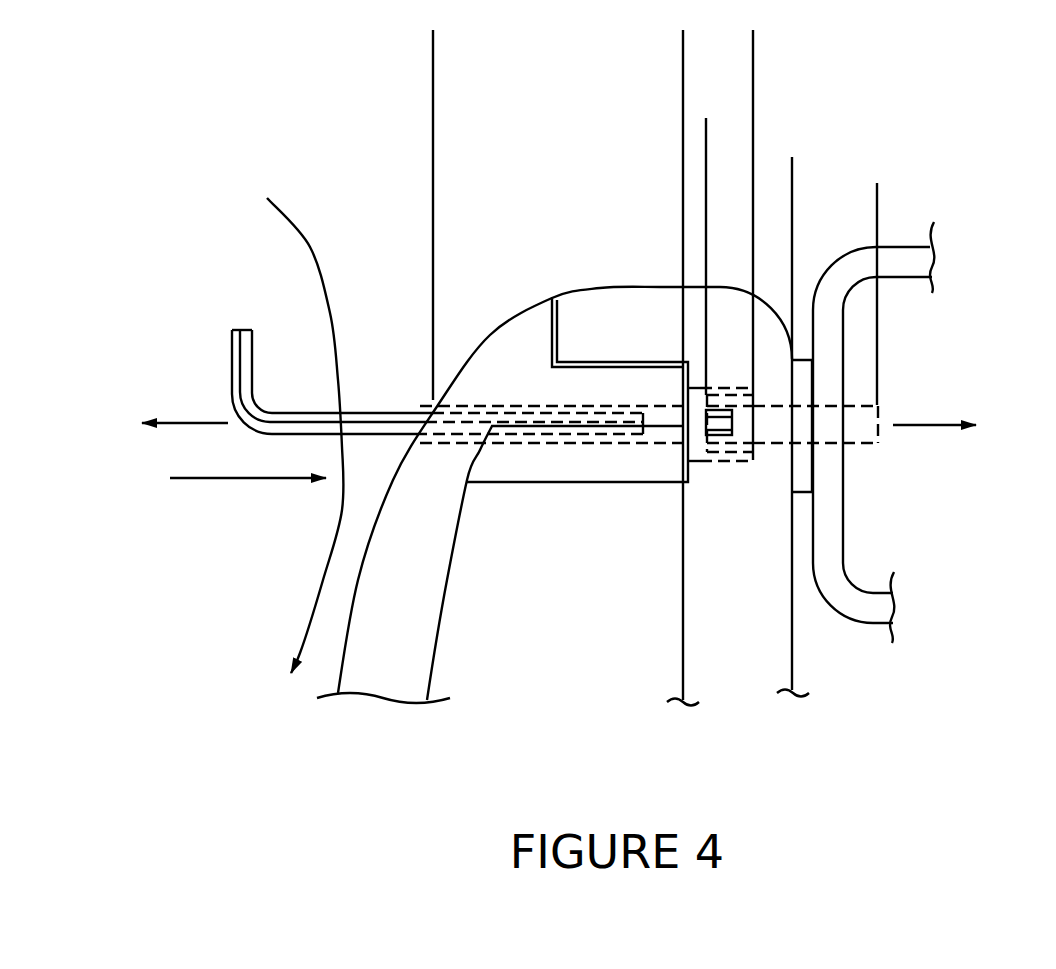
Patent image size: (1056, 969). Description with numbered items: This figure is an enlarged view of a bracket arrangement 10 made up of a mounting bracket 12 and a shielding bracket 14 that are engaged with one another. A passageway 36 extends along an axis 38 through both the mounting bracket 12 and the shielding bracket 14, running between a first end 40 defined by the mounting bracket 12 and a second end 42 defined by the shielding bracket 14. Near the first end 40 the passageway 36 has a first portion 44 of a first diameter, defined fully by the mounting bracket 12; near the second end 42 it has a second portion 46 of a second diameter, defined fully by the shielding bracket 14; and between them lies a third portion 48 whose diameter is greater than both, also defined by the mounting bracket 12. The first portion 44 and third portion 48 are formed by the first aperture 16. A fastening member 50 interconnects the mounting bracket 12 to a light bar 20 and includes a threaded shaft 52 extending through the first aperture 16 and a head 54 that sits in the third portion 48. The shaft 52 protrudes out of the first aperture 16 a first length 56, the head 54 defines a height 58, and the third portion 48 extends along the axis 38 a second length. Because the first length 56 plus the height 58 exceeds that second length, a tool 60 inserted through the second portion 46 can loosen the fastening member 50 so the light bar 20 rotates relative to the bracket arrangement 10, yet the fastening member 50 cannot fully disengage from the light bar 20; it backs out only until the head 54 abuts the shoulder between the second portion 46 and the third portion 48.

The bracket arrangement 10 is at (942, 101).
The mounting bracket 12 is at (756, 637).
The shielding bracket 14 is at (423, 637).
The first aperture 16 is at (702, 392).
The light bar 20 is at (852, 480).
The passageway 36 is at (420, 406).
The axis 38 is at (198, 422).
The first end 40 is at (793, 385).
The second end 42 is at (418, 444).
The first portion 44 is at (840, 181).
The second portion 46 is at (435, 55).
The third portion 48 is at (800, 86).
The fastening member 50 is at (919, 442).
The shaft 52 is at (875, 416).
The head 54 is at (719, 443).
The first length 56 is at (875, 208).
The height 58 is at (655, 131).
The tool 60 is at (240, 327).